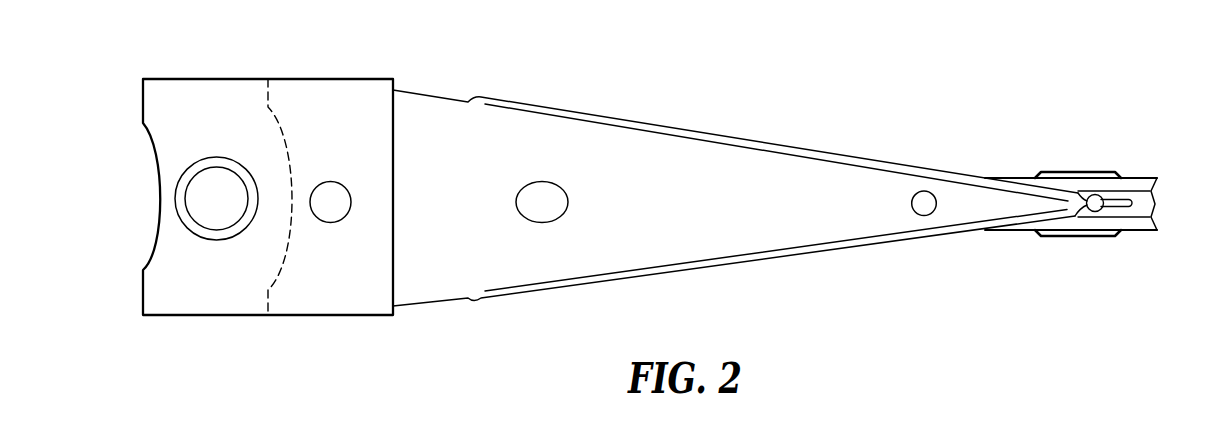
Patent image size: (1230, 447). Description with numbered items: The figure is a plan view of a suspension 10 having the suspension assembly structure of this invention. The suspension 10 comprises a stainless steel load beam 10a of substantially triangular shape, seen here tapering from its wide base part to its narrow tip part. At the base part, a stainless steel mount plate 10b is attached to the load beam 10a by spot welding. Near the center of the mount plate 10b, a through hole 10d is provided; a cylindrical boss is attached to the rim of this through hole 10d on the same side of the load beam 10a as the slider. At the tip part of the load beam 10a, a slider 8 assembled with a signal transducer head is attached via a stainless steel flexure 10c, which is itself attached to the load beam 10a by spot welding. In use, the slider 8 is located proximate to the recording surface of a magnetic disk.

The suspension 10 is at (657, 169).
The load beam 10a is at (443, 105).
The mount plate 10b is at (203, 87).
The flexure 10c is at (1147, 202).
The through hole 10d is at (248, 198).
The slider 8 is at (1083, 237).